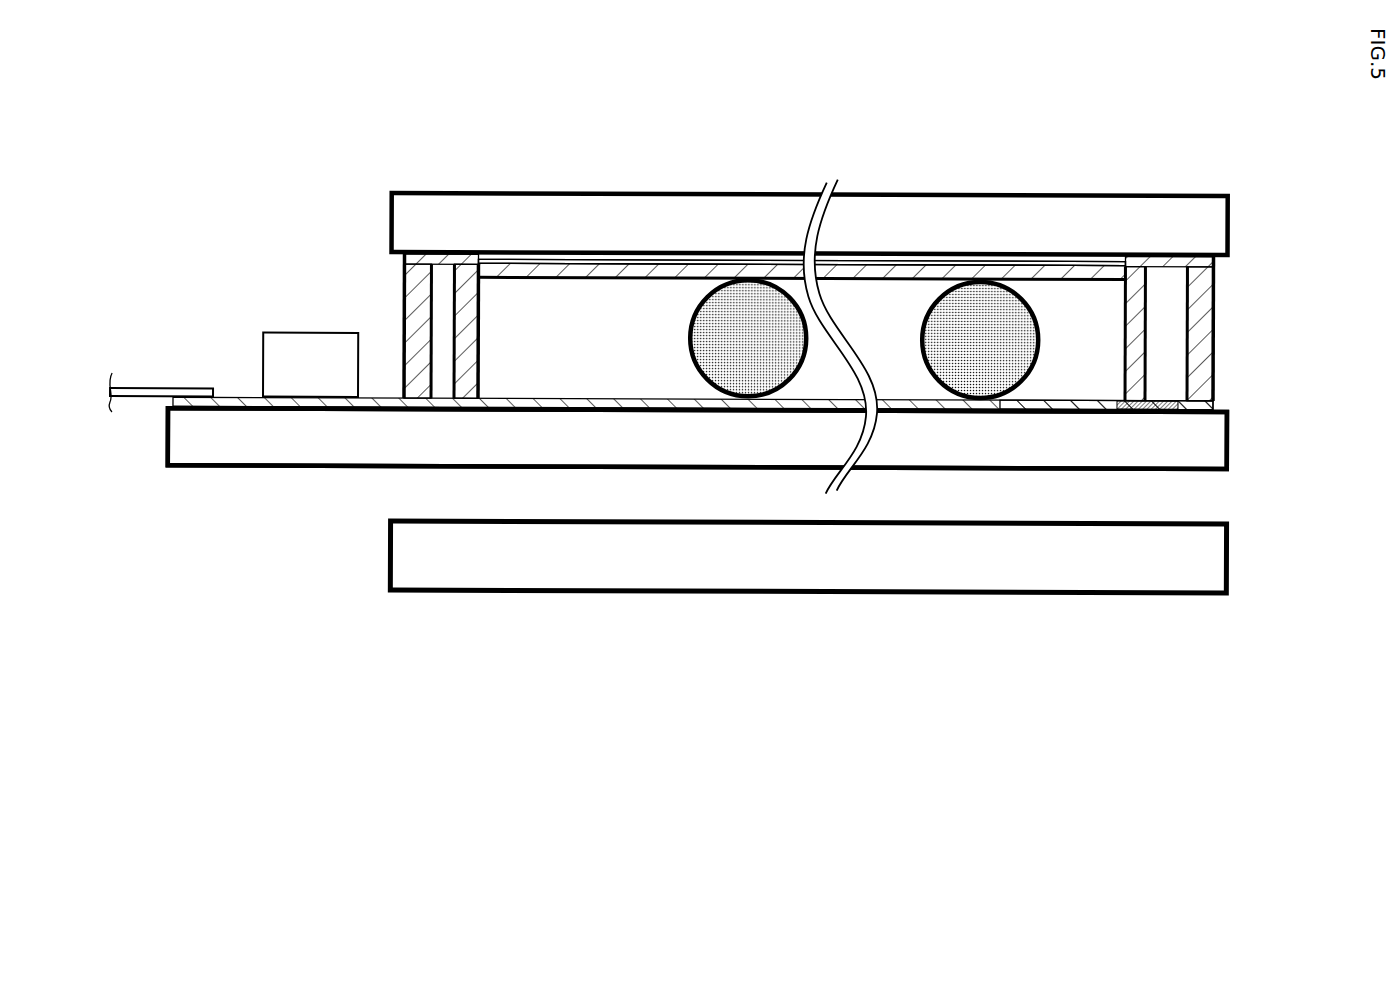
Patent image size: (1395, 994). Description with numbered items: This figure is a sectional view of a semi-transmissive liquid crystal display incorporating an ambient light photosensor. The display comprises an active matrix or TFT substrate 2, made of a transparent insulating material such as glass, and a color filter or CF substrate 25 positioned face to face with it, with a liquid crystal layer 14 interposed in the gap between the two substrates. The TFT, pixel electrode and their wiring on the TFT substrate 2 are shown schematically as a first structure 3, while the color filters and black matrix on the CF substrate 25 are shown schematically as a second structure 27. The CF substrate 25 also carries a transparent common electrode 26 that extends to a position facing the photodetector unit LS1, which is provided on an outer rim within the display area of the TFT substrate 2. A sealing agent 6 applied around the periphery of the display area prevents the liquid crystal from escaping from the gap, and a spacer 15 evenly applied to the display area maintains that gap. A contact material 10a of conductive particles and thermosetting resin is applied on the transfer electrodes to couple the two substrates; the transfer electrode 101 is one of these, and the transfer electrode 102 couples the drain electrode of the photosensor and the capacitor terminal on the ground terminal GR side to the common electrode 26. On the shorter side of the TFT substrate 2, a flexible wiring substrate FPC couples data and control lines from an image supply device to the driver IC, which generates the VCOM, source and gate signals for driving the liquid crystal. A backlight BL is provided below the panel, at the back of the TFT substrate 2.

The TFT substrate 2 is at (625, 440).
The first structure 3 is at (685, 405).
The sealing agent 6 is at (418, 333).
The contact material 10a is at (460, 308).
The transfer electrode 101 is at (413, 409).
The transfer electrode 102 is at (1220, 400).
The liquid crystal layer 14 is at (555, 368).
The spacer 15 is at (750, 362).
The CF substrate 25 is at (903, 212).
The common electrode 26 is at (643, 268).
The second structure 27 is at (1050, 262).
The flexible wiring substrate FPC is at (148, 392).
The driver IC is at (268, 348).
The photodetector unit LS1 is at (1080, 405).
The ground terminal GR is at (1158, 405).
The backlight BL is at (808, 557).